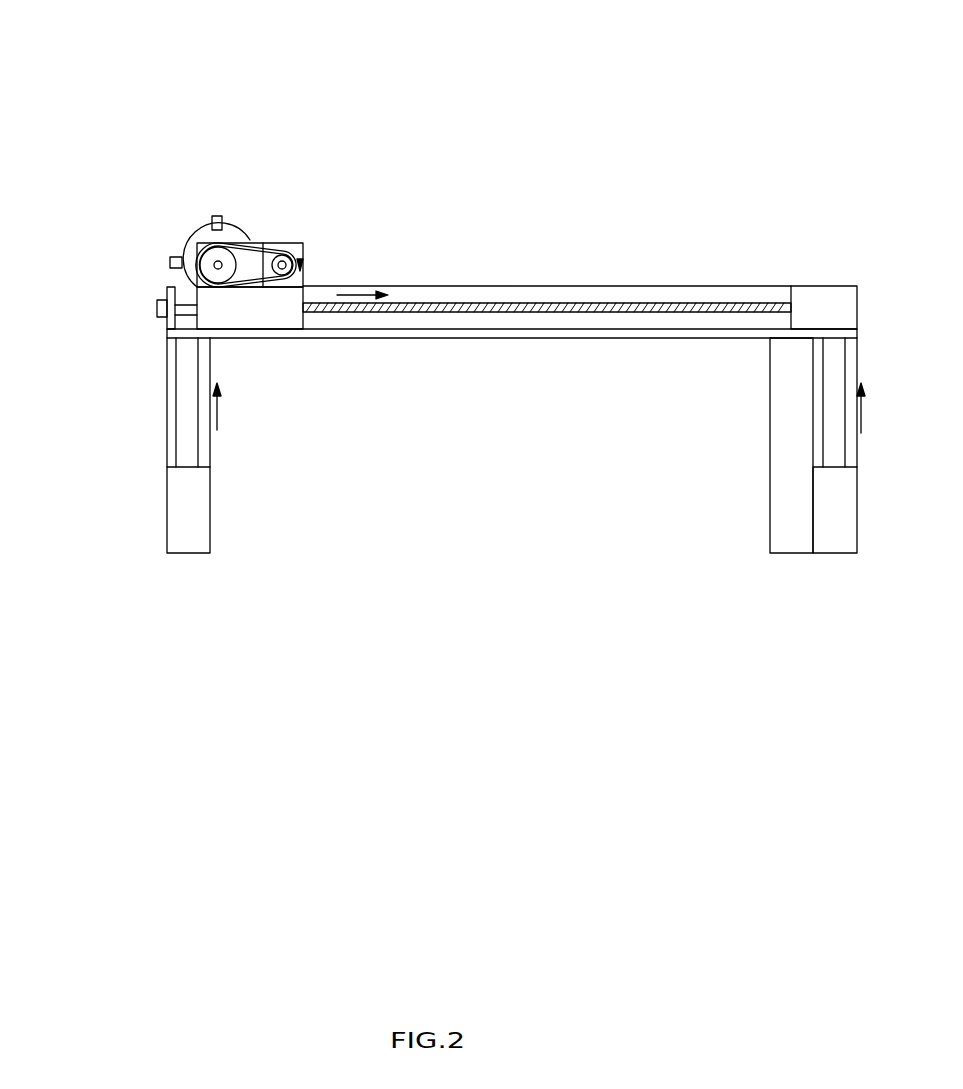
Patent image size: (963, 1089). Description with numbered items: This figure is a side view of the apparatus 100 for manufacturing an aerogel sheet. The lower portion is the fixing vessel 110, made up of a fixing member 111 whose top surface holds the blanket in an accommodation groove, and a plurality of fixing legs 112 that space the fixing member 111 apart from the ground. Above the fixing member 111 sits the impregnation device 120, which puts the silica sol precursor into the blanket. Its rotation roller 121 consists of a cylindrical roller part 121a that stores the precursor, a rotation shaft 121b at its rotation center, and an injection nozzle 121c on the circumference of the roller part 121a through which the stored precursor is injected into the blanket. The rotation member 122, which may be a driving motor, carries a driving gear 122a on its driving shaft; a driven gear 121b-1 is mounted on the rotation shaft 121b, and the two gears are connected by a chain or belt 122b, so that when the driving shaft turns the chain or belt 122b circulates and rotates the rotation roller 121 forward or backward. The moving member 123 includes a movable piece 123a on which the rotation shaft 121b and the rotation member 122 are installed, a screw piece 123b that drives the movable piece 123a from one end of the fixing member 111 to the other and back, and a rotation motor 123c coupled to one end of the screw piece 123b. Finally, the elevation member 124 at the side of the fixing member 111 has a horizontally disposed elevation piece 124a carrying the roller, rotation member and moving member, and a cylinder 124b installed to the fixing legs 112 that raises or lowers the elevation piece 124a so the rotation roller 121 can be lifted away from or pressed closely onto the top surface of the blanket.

The apparatus of manufacturing an aerogel sheet 100 is at (729, 102).
The fixing vessel 110 is at (460, 410).
The fixing member 111 is at (447, 293).
The fixing legs 112 is at (210, 448).
The impregnation device 120 is at (548, 135).
The rotation roller 121 is at (308, 150).
The roller part 121a is at (219, 262).
The rotation shaft 121b is at (223, 240).
The driven gear 121b-1 is at (190, 245).
The injection nozzle 121c is at (216, 217).
The rotation member 122 is at (300, 243).
The driving gear 122a is at (302, 254).
The chain or belt 122b is at (276, 241).
The moving member 123 is at (672, 200).
The movable piece 123a is at (294, 308).
The screw piece 123b is at (493, 312).
The rotation motor 123c is at (805, 308).
The elevation member 124 is at (80, 323).
The elevation piece 124a is at (165, 322).
The cylinder 124b is at (165, 497).